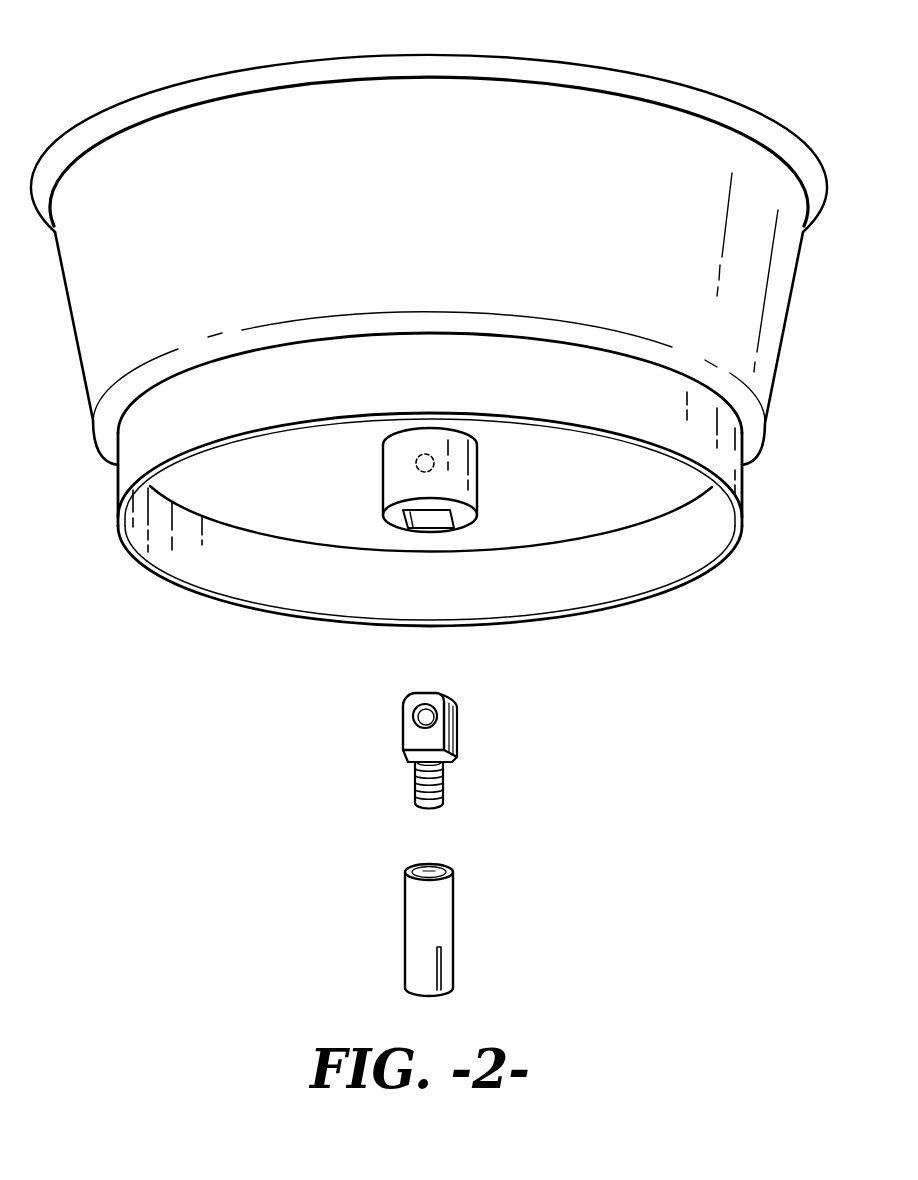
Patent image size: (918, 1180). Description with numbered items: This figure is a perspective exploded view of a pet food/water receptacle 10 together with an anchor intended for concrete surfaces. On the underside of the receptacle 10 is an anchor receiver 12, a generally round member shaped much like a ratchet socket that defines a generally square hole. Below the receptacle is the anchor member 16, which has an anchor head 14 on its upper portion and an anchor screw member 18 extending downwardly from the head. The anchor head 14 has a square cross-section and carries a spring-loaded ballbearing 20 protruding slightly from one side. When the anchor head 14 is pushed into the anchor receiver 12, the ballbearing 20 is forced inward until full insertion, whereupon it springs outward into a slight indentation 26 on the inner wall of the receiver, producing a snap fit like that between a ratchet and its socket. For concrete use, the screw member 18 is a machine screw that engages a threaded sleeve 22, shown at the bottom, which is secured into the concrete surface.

The pet food/water receptacle 10 is at (607, 118).
The anchor receiver 12 is at (477, 490).
The anchor head 14 is at (403, 738).
The anchor member 16 is at (430, 730).
The anchor screw member 18 is at (414, 795).
The spring-loaded ballbearing 20 is at (413, 716).
The threaded sleeve 22 is at (455, 922).
The indentation 26 is at (416, 471).